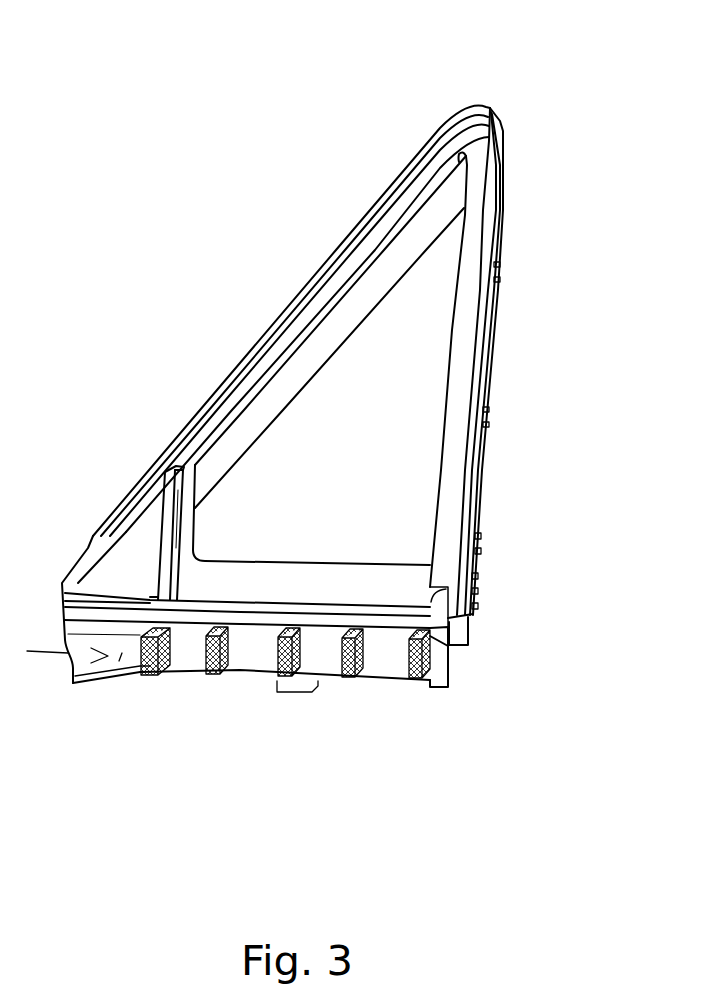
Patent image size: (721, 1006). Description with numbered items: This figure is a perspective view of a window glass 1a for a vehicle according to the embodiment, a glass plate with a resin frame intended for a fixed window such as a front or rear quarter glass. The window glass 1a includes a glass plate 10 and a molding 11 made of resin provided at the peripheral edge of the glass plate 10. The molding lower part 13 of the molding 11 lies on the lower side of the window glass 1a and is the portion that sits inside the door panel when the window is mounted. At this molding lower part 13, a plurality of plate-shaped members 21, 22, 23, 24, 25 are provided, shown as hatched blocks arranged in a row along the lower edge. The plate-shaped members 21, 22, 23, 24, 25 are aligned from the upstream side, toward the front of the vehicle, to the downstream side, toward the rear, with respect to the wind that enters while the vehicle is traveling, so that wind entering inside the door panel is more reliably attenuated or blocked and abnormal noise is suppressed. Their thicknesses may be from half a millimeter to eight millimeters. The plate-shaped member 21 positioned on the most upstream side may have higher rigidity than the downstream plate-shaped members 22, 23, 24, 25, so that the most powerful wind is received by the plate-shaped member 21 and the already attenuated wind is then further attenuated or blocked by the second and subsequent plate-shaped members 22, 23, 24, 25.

The window glass for a vehicle 1a is at (198, 102).
The glass plate 10 is at (422, 472).
The molding 11 is at (243, 370).
The molding lower part 13 is at (253, 660).
The plate-shaped member 21 is at (143, 675).
The plate-shaped member 22 is at (207, 674).
The plate-shaped member 23 is at (278, 677).
The plate-shaped member 24 is at (342, 678).
The plate-shaped member 25 is at (408, 679).